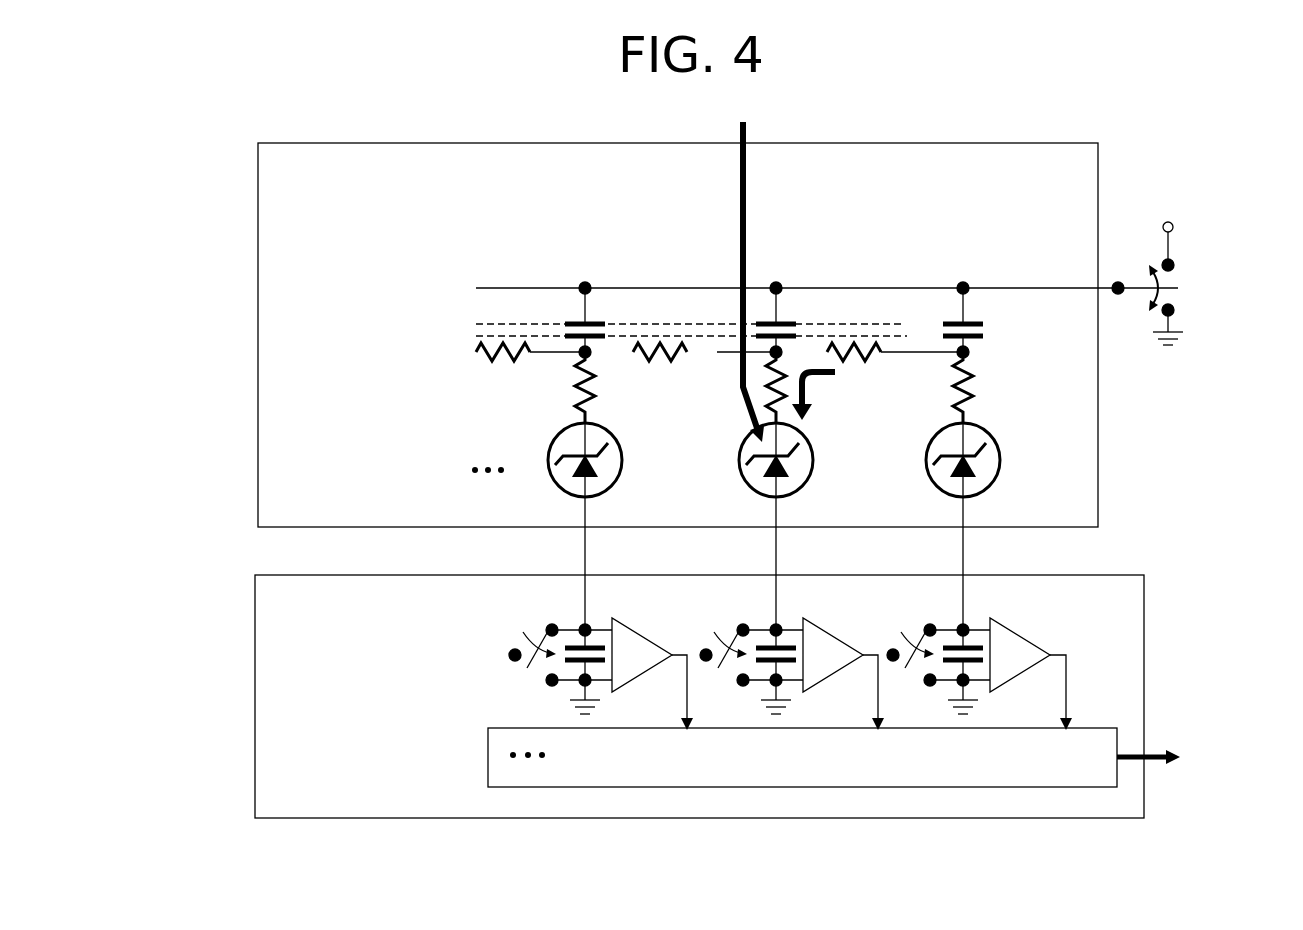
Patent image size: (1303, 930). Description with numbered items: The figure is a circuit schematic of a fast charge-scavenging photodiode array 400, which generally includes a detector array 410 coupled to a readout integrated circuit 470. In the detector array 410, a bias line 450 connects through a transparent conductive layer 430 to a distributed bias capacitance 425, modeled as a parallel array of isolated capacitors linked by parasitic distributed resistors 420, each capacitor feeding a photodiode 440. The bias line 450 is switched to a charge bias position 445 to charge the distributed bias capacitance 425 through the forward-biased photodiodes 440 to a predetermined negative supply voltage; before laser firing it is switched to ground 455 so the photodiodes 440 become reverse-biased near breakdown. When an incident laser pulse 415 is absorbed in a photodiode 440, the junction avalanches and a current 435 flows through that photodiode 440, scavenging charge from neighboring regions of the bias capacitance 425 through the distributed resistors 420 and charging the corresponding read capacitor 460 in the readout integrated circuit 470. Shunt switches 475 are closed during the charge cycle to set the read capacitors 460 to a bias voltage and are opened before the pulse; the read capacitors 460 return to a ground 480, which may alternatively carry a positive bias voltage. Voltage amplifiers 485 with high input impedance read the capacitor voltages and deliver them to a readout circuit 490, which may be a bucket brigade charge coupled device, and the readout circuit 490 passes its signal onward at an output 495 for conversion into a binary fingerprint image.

The fast charge-scavenging photodiode array 400 is at (220, 192).
The detector array 410 is at (350, 199).
The incident laser pulse 415 is at (742, 252).
The parasitic distributed resistors 420 is at (556, 387).
The distributed bias capacitance 425 is at (812, 303).
The transparent conductive layer 430 is at (1008, 284).
The current 435 is at (830, 396).
The photodiode 440 is at (1002, 442).
The charge bias position 445 is at (1168, 250).
The bias line 450 is at (1186, 282).
The ground 455 is at (1197, 328).
The read capacitor 460 is at (569, 637).
The readout integrated circuit 470 is at (358, 637).
The shunt switches 475 is at (508, 657).
The ground 480 is at (556, 702).
The voltage amplifiers 485 is at (843, 670).
The readout circuit 490 is at (481, 762).
The output 495 is at (1177, 762).